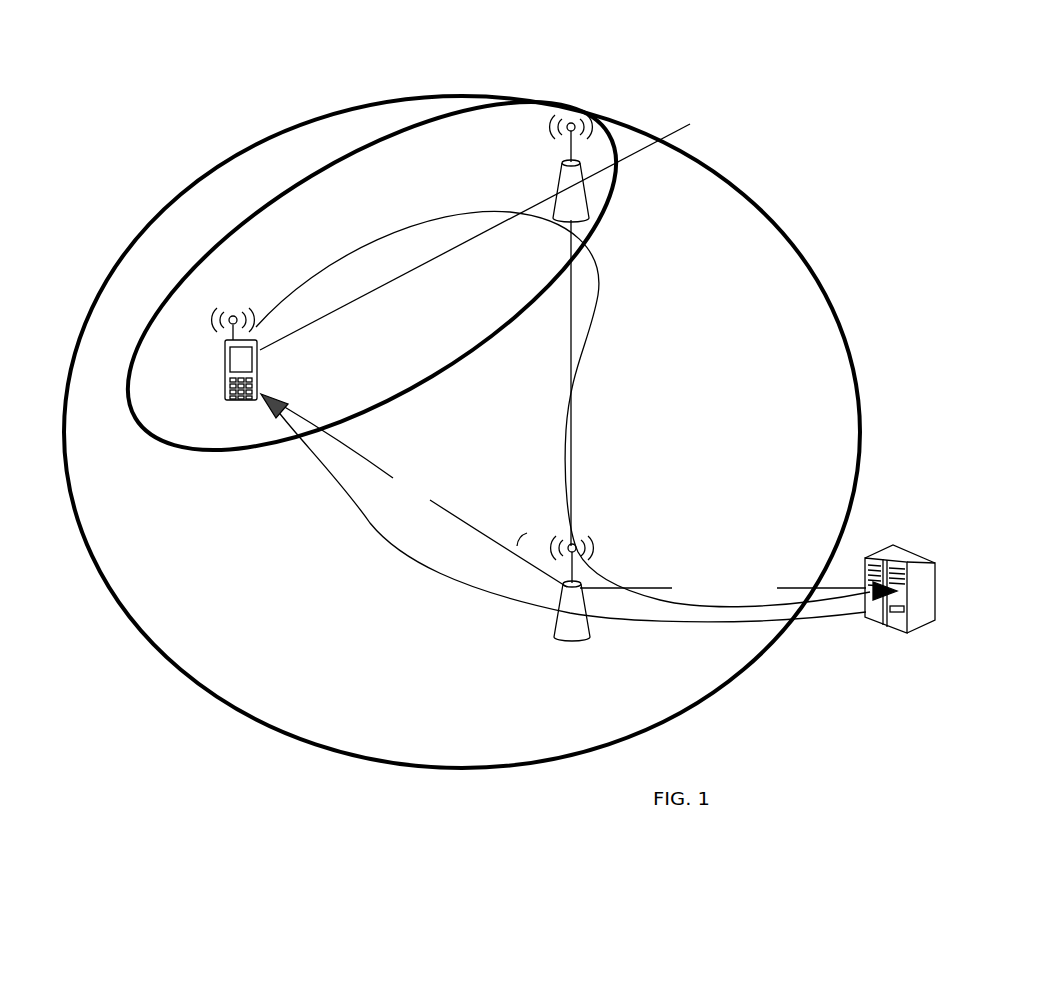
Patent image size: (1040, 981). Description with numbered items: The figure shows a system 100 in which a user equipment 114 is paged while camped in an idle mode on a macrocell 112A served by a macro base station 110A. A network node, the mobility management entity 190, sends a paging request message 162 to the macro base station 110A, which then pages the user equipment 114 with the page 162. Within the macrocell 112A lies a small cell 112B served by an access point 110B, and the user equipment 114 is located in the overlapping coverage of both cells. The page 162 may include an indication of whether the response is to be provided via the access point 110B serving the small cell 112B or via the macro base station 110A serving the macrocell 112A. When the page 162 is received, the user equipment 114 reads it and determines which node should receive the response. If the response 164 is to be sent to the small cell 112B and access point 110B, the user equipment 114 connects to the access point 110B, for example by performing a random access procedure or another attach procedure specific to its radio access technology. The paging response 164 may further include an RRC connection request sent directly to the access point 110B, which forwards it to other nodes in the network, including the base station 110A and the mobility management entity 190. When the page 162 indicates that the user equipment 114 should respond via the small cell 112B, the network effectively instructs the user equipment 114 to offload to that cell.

The system 100 is at (535, 26).
The macro base station 110A is at (558, 616).
The access point 110B is at (502, 232).
The macrocell 112A is at (780, 190).
The small cell 112B is at (365, 395).
The user equipment 114 is at (222, 358).
The paging request message 162 is at (427, 573).
The paging response 164 is at (297, 278).
The mobility management entity 190 is at (934, 562).